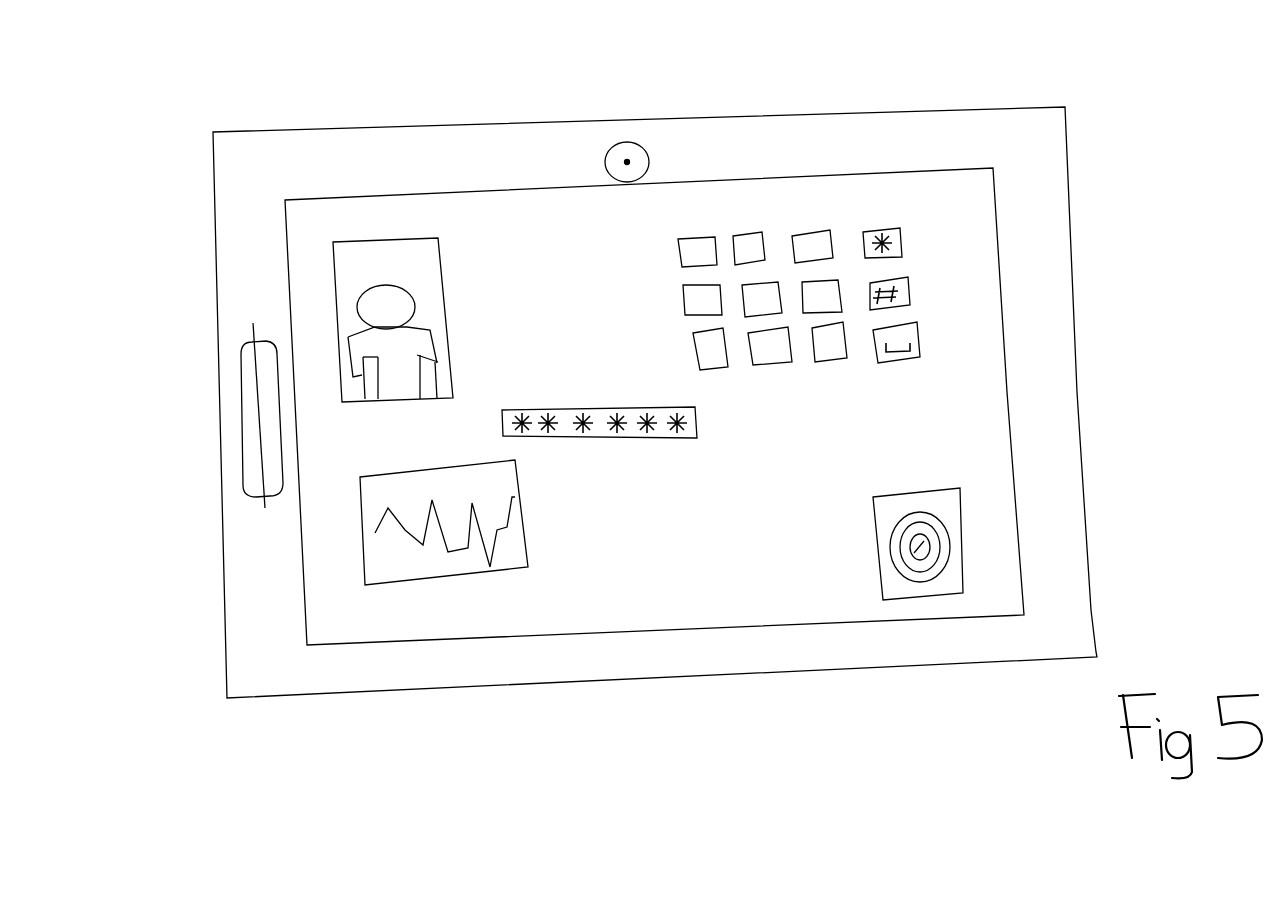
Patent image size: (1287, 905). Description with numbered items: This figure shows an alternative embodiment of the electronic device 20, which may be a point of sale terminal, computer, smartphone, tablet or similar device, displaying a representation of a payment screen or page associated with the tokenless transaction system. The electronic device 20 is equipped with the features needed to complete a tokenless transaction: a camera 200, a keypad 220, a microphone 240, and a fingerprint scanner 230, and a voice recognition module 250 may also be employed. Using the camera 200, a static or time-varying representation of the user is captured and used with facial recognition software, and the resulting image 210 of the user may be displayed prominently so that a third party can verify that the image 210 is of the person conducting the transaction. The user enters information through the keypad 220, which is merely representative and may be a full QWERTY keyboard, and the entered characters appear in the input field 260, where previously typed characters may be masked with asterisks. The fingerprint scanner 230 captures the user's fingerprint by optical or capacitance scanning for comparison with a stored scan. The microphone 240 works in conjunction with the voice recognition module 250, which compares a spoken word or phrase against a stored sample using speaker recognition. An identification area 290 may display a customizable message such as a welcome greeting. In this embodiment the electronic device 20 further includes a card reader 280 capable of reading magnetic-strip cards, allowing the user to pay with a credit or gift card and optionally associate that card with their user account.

The electronic device 20 is at (987, 60).
The camera 200 is at (610, 147).
The image of the user 210 is at (370, 255).
The keypad 220 is at (808, 222).
The fingerprint scanner 230 is at (943, 580).
The microphone 240 is at (666, 664).
The voice recognition module 250 is at (372, 550).
The input field 260 is at (600, 438).
The card reader 280 is at (279, 506).
The identification area 290 is at (490, 222).